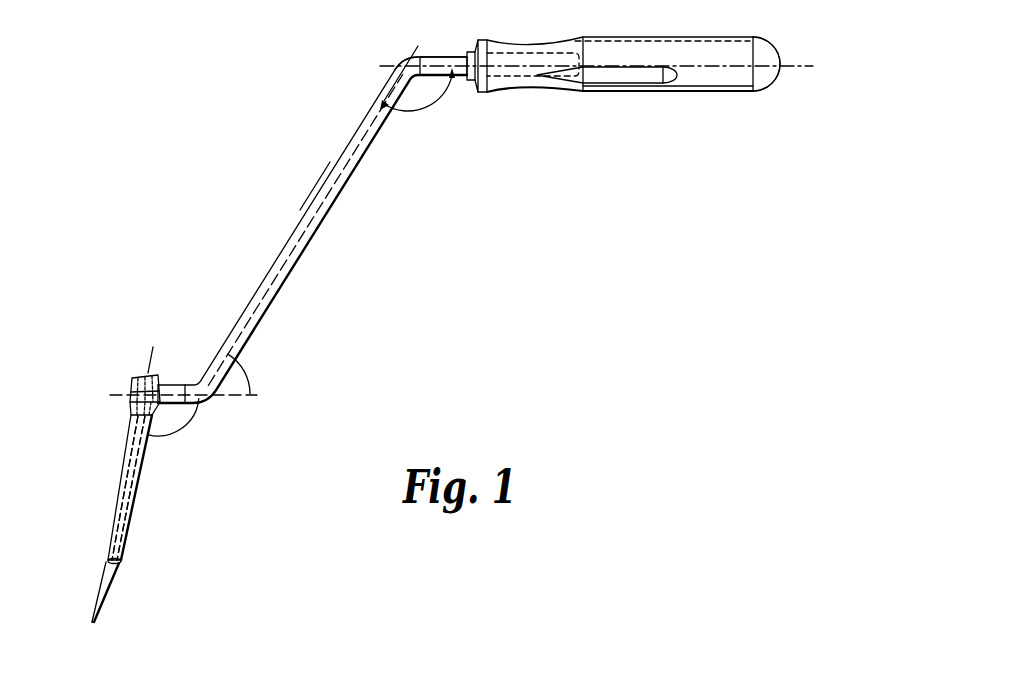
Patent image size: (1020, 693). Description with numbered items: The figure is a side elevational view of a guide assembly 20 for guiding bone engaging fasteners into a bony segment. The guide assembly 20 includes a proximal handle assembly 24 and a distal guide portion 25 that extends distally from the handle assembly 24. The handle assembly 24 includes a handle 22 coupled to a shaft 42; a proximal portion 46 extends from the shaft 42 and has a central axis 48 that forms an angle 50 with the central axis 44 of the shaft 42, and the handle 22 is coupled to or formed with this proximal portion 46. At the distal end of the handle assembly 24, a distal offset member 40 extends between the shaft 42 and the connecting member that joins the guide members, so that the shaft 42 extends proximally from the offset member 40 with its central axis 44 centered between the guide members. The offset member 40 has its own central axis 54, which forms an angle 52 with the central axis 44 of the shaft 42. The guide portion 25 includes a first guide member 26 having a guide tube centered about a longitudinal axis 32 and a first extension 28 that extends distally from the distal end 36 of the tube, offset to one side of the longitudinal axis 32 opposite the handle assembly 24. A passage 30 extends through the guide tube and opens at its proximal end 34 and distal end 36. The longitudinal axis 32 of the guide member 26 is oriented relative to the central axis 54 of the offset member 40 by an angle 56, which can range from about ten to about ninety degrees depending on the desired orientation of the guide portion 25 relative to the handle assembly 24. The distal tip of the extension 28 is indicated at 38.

The guide assembly 20 is at (538, 292).
The handle 22 is at (660, 97).
The handle assembly 24 is at (368, 82).
The distal guide portion 25 is at (101, 387).
The first guide member 26 is at (108, 502).
The first extension 28 is at (105, 585).
The passage 30 is at (123, 553).
The longitudinal axis 32 is at (121, 538).
The proximal end 34 is at (128, 388).
The distal end 36 is at (118, 567).
The tip end 38 is at (92, 625).
The distal offset member 40 is at (170, 383).
The shaft 42 is at (314, 236).
The central axis 44 is at (330, 183).
The proximal portion 46 is at (442, 56).
The central axis 48 is at (797, 62).
The angle 50 is at (428, 108).
The angle 52 is at (243, 368).
The central axis 54 is at (240, 397).
The angle 56 is at (173, 420).